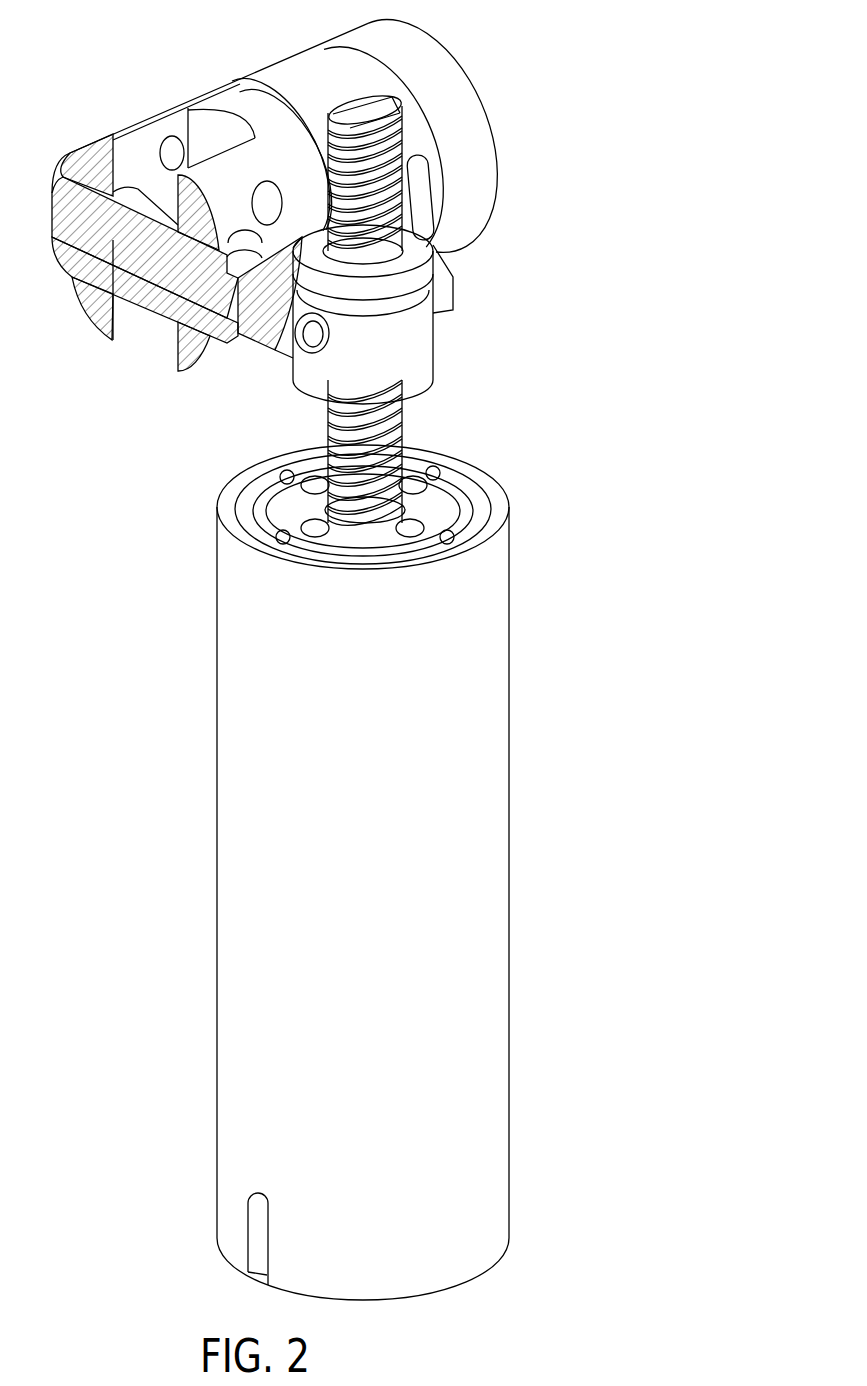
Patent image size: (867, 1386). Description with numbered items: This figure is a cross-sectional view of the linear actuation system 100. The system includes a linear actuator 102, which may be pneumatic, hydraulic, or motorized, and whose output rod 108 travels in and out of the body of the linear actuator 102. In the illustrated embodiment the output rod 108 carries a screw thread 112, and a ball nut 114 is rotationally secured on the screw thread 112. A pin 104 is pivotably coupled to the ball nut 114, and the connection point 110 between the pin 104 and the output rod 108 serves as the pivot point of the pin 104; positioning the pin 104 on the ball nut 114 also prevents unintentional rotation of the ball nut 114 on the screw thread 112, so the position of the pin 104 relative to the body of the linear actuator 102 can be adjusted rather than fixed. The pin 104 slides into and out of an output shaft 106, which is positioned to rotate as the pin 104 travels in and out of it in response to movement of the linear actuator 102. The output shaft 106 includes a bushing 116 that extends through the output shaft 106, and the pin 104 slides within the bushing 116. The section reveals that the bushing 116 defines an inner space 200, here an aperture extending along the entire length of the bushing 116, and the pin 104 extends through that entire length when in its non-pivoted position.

The linear actuation system 100 is at (373, 650).
The linear actuator 102 is at (487, 958).
The pin 104 is at (230, 329).
The output shaft 106 is at (301, 185).
The output rod 108 is at (469, 308).
The connection point 110 is at (286, 378).
The screw thread 112 is at (415, 413).
The ball nut 114 is at (447, 347).
The bushing 116 is at (154, 186).
The inner space 200 is at (145, 292).